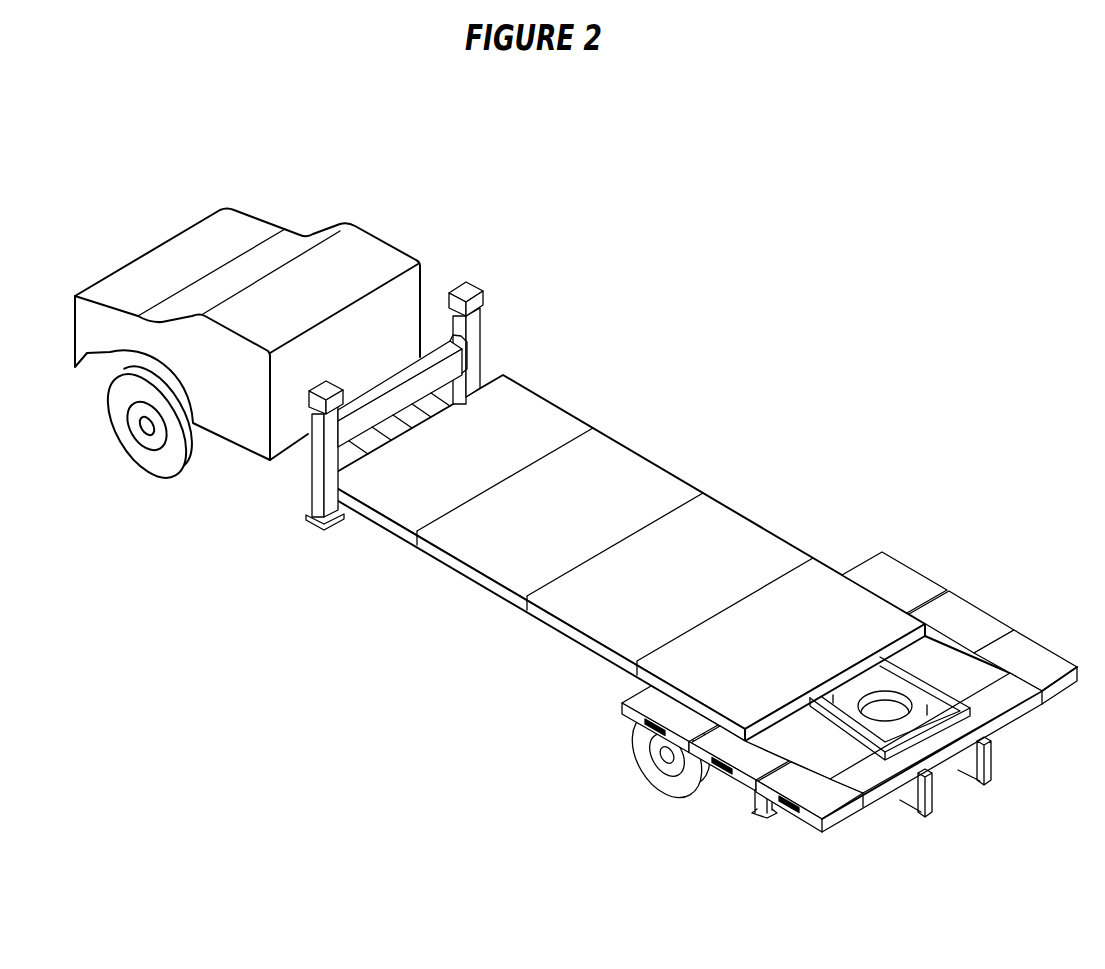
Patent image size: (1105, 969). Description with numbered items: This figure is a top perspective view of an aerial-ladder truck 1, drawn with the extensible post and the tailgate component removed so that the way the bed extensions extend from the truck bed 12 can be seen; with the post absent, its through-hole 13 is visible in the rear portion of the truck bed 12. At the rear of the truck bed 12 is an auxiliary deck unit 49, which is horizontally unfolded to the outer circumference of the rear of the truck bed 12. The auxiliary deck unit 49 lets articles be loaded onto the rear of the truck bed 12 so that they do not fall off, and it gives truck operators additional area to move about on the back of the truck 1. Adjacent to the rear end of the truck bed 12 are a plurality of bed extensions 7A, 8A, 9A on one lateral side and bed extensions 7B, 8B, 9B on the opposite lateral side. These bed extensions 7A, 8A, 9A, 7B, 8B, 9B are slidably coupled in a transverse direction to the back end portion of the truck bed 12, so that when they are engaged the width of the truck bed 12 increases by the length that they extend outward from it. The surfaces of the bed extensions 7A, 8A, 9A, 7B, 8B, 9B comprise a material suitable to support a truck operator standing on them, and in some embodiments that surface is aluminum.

The aerial-ladder truck 1 is at (720, 399).
The truck bed 12 is at (587, 642).
The bed extension 7A is at (635, 720).
The bed extension 8A is at (744, 789).
The bed extension 9A is at (801, 815).
The bed extension 7B is at (903, 572).
The bed extension 8B is at (970, 616).
The bed extension 9B is at (1038, 654).
The through-hole 13 is at (905, 703).
The auxiliary deck unit 49 is at (850, 752).